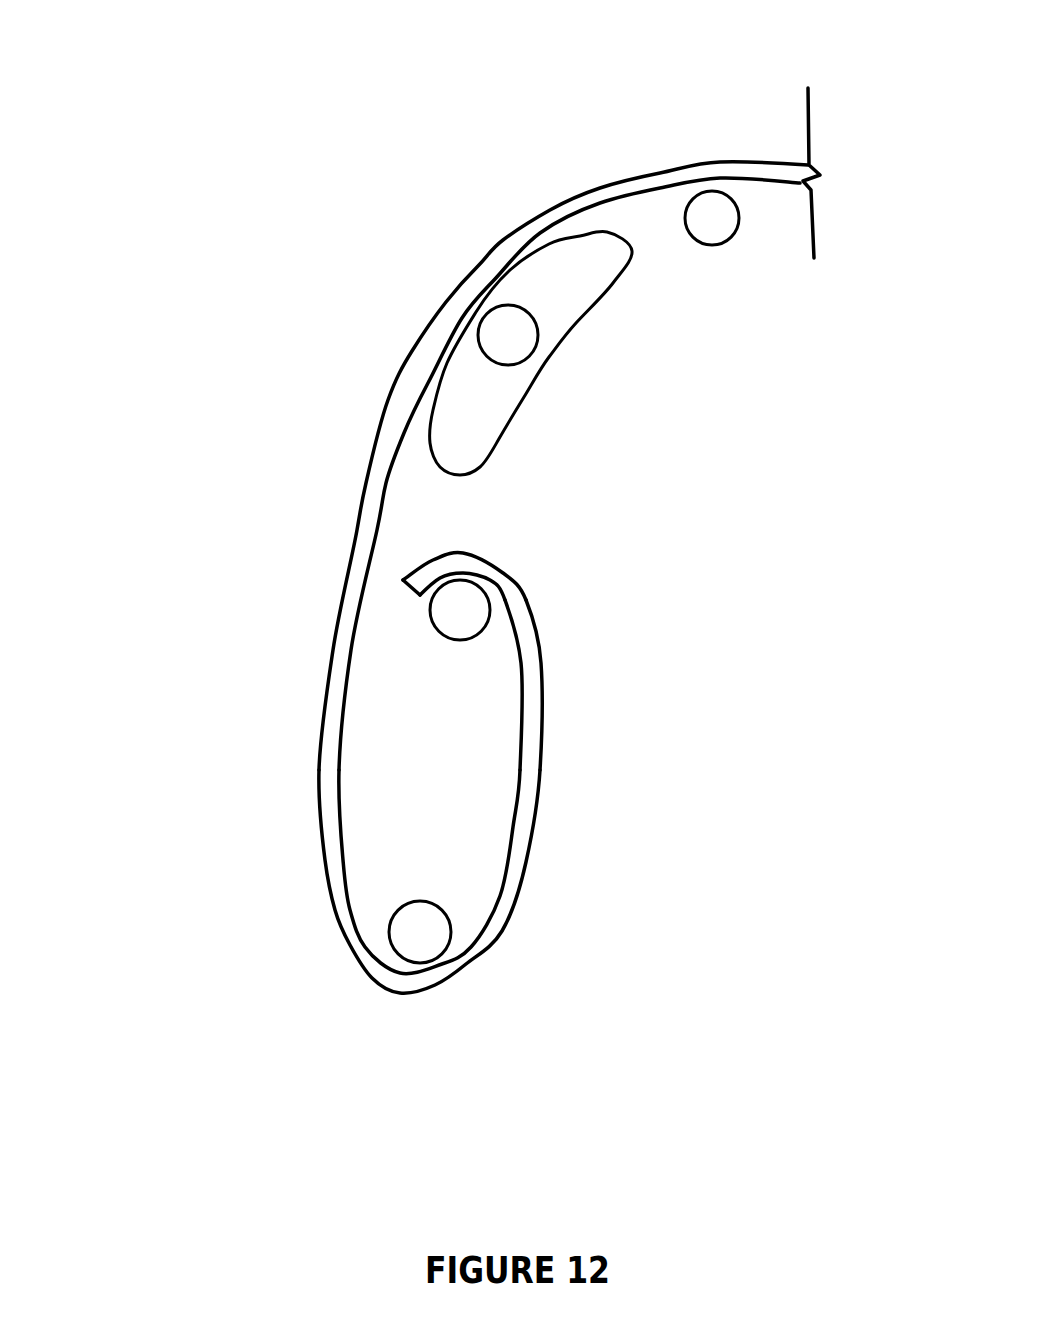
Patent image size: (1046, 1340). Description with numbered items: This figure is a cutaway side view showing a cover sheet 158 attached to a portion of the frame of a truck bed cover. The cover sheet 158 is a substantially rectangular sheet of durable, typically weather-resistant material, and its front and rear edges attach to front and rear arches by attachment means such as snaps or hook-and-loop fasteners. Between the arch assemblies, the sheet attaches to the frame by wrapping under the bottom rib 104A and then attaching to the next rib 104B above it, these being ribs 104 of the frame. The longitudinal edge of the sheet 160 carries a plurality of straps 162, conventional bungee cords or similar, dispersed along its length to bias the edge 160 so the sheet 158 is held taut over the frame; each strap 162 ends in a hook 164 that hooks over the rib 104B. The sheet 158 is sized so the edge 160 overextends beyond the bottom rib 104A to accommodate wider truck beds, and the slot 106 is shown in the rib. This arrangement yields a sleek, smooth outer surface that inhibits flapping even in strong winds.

The rib 104 is at (432, 544).
The bottom rib 104A is at (360, 921).
The next rib 104B is at (426, 466).
The slot 106 is at (548, 378).
The cover sheet 158 is at (352, 427).
The edge of the sheet 160 is at (507, 958).
The straps 162 is at (548, 802).
The hook 164 is at (515, 562).